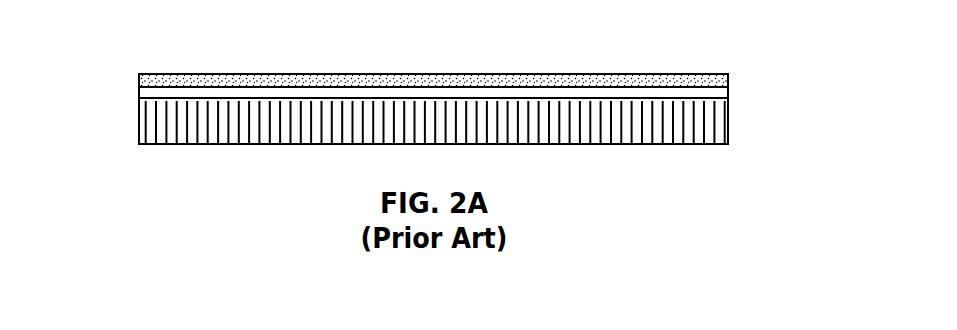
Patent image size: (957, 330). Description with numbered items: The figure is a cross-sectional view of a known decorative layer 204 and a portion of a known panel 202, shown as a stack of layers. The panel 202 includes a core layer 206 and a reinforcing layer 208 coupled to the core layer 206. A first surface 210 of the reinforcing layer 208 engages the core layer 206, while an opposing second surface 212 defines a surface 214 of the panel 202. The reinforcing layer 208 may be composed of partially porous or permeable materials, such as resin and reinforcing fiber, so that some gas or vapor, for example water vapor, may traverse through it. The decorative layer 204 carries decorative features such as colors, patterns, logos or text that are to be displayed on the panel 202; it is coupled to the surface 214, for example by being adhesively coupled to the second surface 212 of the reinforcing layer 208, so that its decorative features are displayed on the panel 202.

The known panel 202 is at (747, 94).
The known decorative layer 204 is at (707, 74).
The core layer 206 is at (139, 131).
The reinforcing layer 208 is at (139, 93).
The first surface 210 is at (574, 100).
The second surface 212 is at (598, 74).
The surface 214 is at (213, 74).